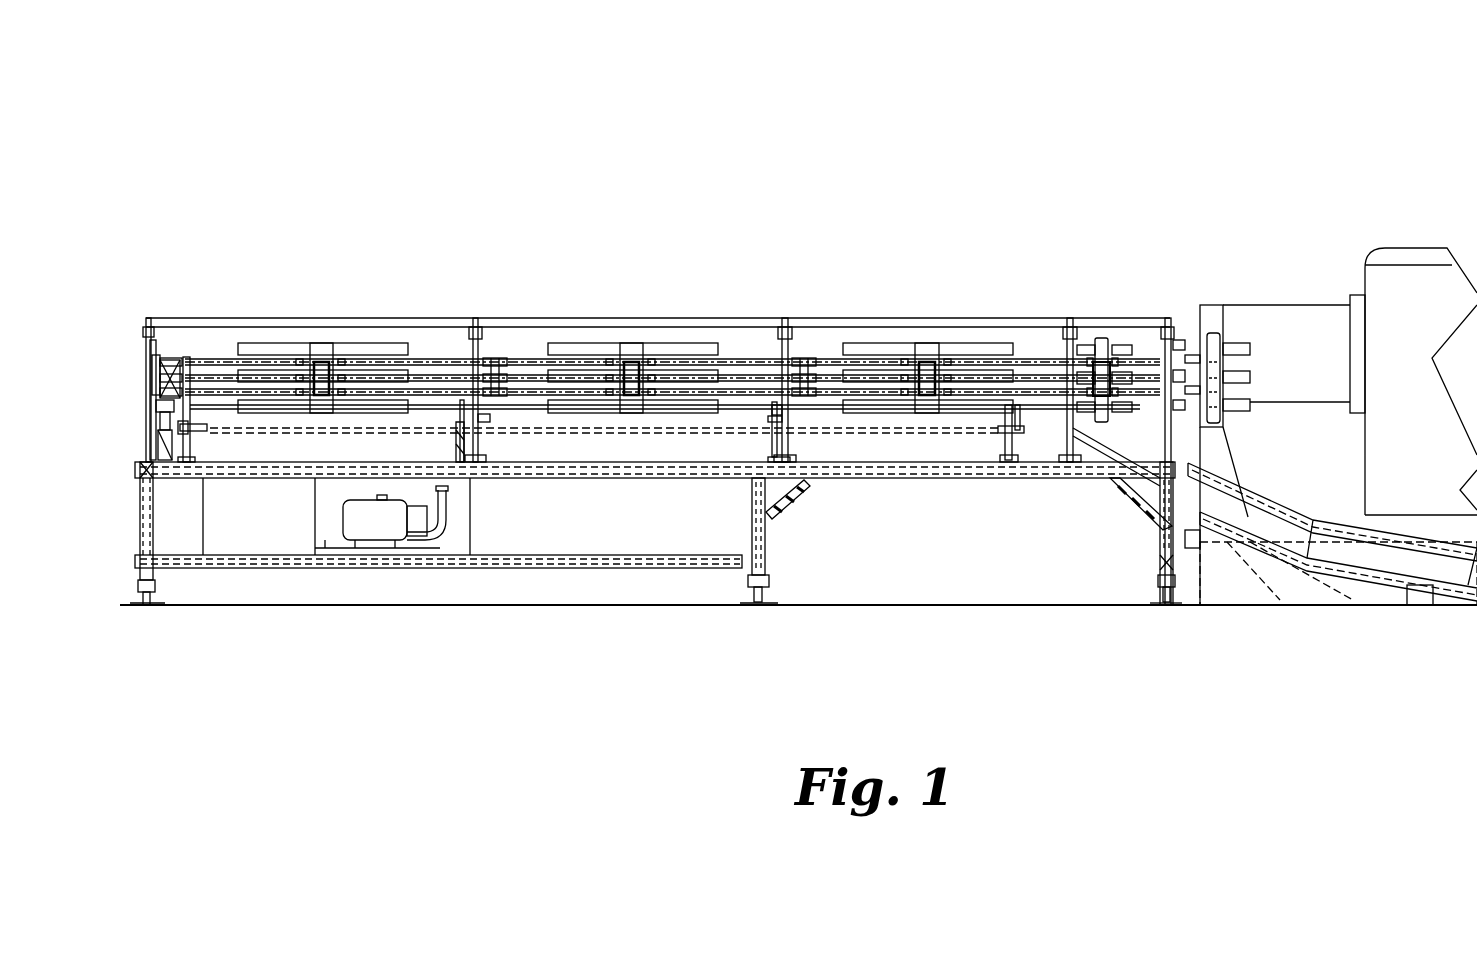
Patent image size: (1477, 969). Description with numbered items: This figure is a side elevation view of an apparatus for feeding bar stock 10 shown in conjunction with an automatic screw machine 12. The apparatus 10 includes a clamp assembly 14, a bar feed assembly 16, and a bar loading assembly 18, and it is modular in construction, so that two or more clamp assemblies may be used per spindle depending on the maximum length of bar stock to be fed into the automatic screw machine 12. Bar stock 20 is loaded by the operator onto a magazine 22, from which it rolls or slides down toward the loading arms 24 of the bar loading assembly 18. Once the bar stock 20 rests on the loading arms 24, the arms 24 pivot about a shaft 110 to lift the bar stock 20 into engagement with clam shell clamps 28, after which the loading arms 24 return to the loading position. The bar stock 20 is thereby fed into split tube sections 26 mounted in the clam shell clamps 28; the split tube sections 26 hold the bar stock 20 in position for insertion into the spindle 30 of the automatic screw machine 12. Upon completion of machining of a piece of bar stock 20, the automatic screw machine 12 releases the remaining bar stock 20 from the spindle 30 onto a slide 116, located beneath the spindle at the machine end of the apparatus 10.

The apparatus for feeding bar stock 10 is at (435, 183).
The automatic screw machine 12 is at (1360, 244).
The clamp assembly 14 is at (304, 338).
The bar feed assembly 16 is at (485, 446).
The bar loading assembly 18 is at (768, 425).
The bar stock 20 is at (1047, 410).
The magazine 22 is at (1002, 432).
The loading arms 24 is at (200, 427).
The split tube sections 26 is at (698, 345).
The clam shell clamps 28 is at (1098, 340).
The spindle 30 is at (1189, 340).
The shaft 110 is at (632, 430).
The slide 116 is at (1112, 495).